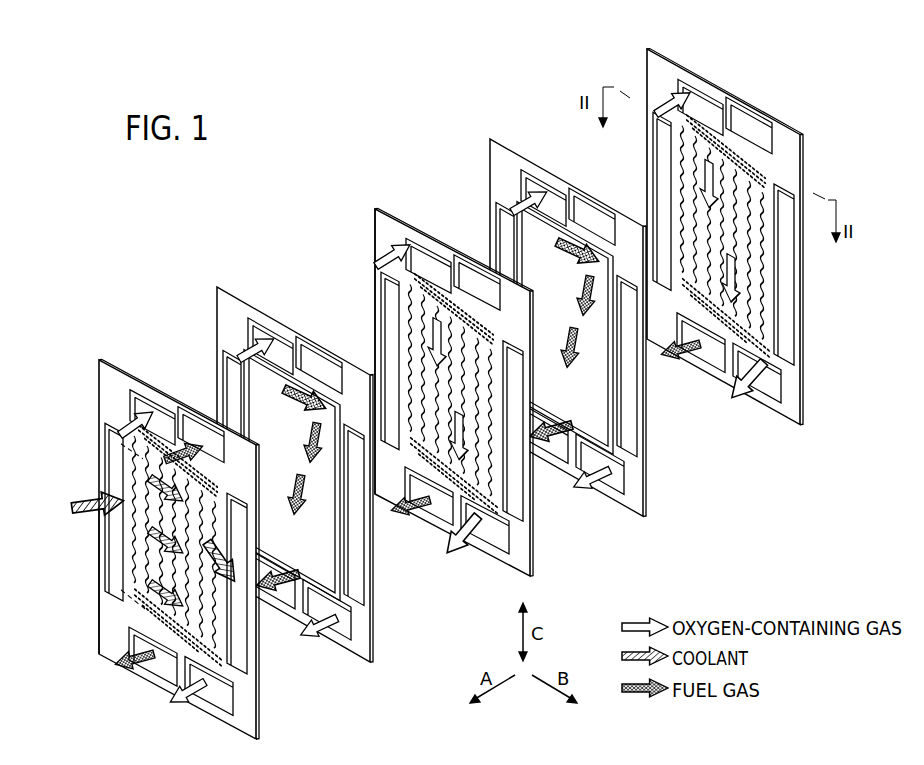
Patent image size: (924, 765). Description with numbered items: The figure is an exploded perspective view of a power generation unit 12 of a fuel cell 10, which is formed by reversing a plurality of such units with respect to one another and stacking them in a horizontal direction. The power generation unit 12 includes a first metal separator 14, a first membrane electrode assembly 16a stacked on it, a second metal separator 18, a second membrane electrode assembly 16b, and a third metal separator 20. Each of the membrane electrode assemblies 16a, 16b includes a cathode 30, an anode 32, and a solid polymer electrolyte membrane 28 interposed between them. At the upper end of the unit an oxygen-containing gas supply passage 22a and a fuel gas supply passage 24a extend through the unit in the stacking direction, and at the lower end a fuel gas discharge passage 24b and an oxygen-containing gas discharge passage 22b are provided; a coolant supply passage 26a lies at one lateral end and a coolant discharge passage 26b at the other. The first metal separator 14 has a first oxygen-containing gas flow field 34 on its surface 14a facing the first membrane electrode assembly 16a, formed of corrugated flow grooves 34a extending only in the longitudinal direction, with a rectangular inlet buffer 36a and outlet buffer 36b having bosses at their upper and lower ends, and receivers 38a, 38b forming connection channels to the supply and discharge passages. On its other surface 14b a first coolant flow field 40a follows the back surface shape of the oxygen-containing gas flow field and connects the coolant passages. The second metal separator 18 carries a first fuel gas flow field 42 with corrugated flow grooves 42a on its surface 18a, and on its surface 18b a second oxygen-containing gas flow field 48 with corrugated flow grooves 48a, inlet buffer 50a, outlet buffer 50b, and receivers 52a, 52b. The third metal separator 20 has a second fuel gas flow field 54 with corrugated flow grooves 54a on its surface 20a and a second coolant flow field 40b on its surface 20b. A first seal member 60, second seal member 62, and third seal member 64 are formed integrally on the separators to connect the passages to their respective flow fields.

The fuel cell 10 is at (197, 197).
The power generation unit 12 is at (163, 197).
The first metal separator 14 is at (724, 224).
The surface 14a is at (783, 400).
The surface 14b is at (786, 379).
The first membrane electrode assembly 16a is at (489, 137).
The second membrane electrode assembly 16b is at (423, 463).
The second metal separator 18 is at (448, 385).
The surface 18a is at (514, 531).
The surface 18b is at (510, 554).
The third metal separator 20 is at (173, 538).
The surface 20a is at (242, 690).
The surface 20b is at (238, 710).
The oxygen-containing gas supply passage 22a is at (139, 400).
The oxygen-containing gas discharge passage 22b is at (212, 690).
The fuel gas supply passage 24a is at (185, 428).
The fuel gas discharge passage 24b is at (158, 662).
The coolant supply passage 26a is at (112, 438).
The coolant discharge passage 26b is at (236, 653).
The solid polymer electrolyte membrane 28 is at (354, 627).
The cathode 30 is at (318, 598).
The anode 32 is at (321, 564).
The first oxygen-containing gas flow field 34 is at (724, 235).
The corrugated flow grooves 34a is at (748, 265).
The inlet buffer 36a is at (758, 152).
The outlet buffer 36b is at (757, 334).
The receivers 38a is at (709, 116).
The receivers 38b is at (755, 380).
The first coolant flow field 40a is at (695, 160).
The second coolant flow field 40b is at (152, 506).
The first fuel gas flow field 42 is at (448, 384).
The corrugated flow grooves 42a is at (400, 297).
The second oxygen-containing gas flow field 48 is at (442, 460).
The corrugated flow grooves 48a is at (408, 338).
The inlet buffer 50a is at (479, 313).
The outlet buffer 50b is at (490, 482).
The receivers 52a is at (427, 272).
The receivers 52b is at (494, 525).
The second fuel gas flow field 54 is at (112, 590).
The corrugated flow grooves 54a is at (140, 457).
The first seal member 60 is at (802, 290).
The second seal member 62 is at (378, 238).
The third seal member 64 is at (101, 634).